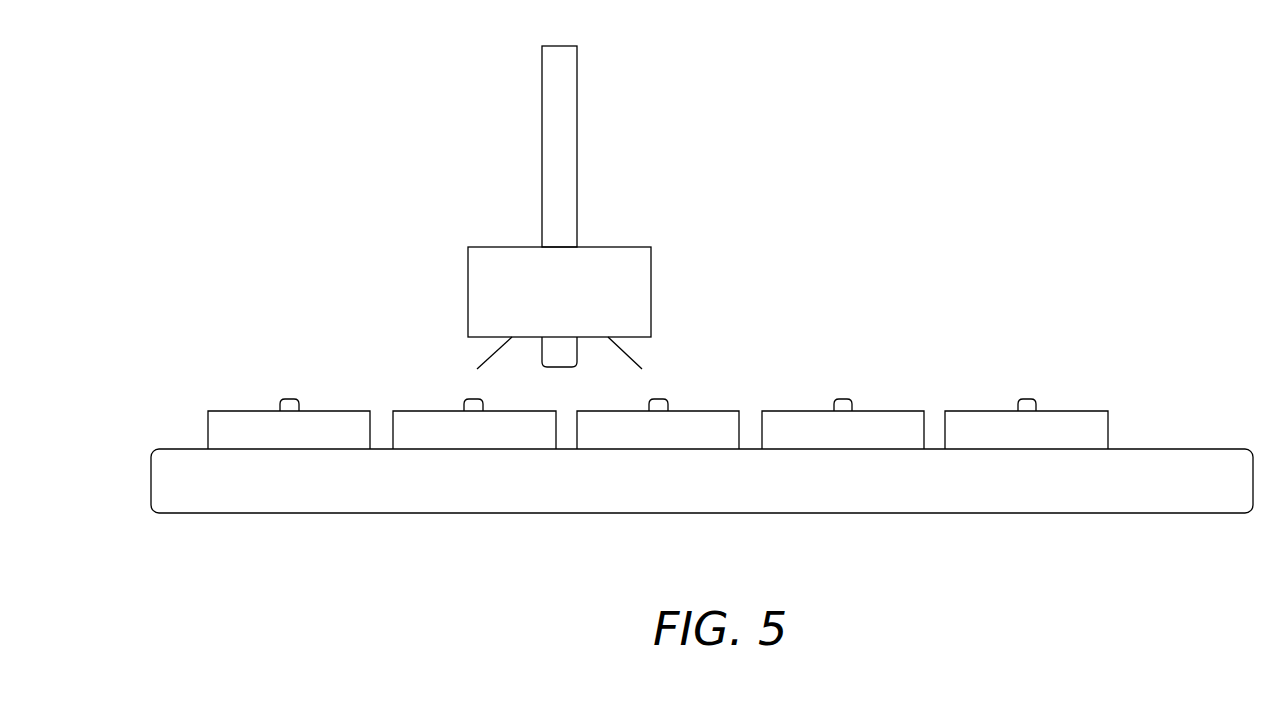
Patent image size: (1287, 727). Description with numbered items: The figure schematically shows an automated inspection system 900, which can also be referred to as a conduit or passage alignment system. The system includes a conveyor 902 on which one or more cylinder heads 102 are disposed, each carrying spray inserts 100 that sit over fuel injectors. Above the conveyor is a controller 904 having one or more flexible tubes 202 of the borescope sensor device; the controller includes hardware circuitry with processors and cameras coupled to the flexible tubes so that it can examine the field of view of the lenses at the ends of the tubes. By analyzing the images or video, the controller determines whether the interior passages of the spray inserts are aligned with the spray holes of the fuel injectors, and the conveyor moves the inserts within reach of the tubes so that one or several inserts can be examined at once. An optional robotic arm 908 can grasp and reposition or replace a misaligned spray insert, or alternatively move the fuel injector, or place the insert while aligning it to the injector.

The automated inspection system 900 is at (402, 165).
The controller 904 is at (651, 273).
The robotic arm 908 is at (558, 367).
The flexible tube 202 is at (477, 357).
The cylinder head 102 is at (238, 410).
The spray insert 100 is at (845, 398).
The conveyor 902 is at (935, 513).